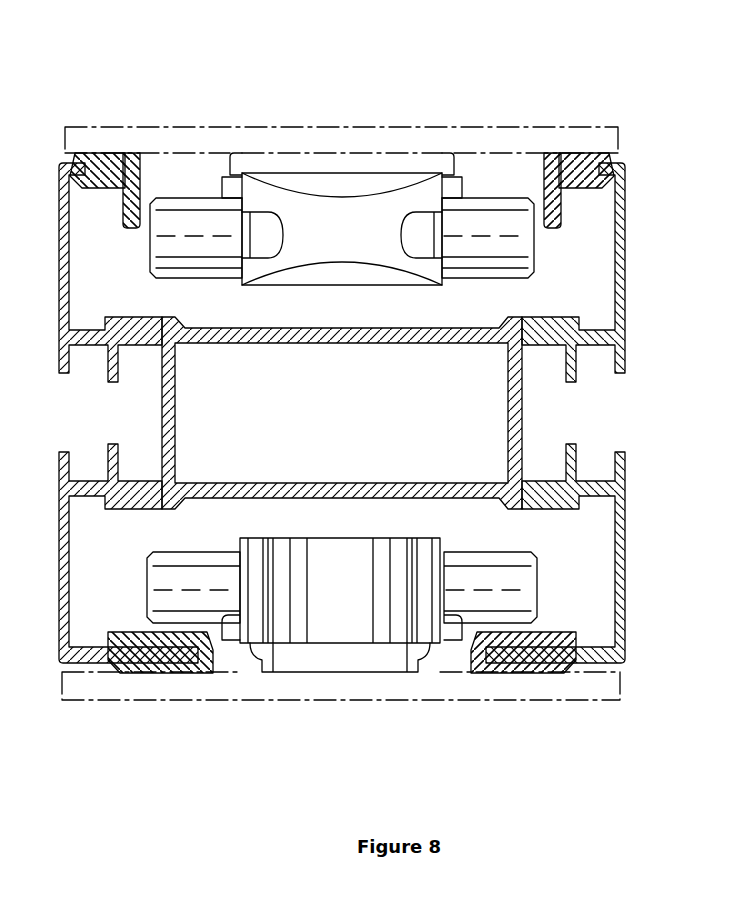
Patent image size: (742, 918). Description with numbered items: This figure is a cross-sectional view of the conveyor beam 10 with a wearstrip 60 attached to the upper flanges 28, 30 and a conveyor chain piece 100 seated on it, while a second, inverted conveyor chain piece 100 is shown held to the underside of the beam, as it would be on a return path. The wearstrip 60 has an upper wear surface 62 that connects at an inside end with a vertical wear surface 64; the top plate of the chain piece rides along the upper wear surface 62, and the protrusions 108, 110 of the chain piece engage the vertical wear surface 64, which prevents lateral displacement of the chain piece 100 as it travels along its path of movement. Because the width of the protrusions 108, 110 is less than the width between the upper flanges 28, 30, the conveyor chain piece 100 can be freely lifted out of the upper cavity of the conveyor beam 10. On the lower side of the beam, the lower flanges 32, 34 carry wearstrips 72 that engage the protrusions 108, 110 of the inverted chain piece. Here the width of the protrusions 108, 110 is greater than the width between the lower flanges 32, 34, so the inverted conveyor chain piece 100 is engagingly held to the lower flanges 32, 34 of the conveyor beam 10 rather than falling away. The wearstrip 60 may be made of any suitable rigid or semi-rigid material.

The conveyor beam 10 is at (672, 312).
The upper flange 28 is at (78, 161).
The upper flange 30 is at (612, 165).
The lower flange 32 is at (95, 652).
The lower flange 34 is at (596, 650).
The wearstrip 60 is at (117, 210).
The upper wear surface 62 is at (118, 160).
The vertical wear surface 64 is at (142, 178).
The wearstrip 72 is at (120, 631).
The conveyor chain piece 100 is at (432, 90).
The protrusion 108 is at (158, 245).
The protrusion 110 is at (522, 243).